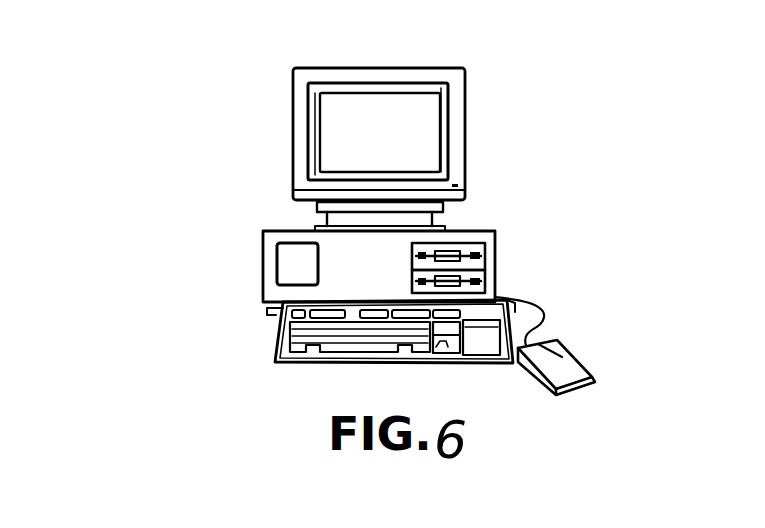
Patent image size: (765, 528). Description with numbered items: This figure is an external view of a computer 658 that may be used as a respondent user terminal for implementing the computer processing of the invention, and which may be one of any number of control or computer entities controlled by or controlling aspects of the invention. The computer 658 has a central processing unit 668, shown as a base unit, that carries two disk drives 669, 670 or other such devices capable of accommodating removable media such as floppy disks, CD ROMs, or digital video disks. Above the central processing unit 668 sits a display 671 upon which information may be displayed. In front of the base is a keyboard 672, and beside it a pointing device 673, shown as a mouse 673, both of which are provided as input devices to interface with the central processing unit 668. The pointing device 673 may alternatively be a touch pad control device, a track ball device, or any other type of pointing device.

The computer 658 is at (206, 106).
The central processing unit 668 is at (275, 208).
The disk drive 669 is at (400, 256).
The disk drive 670 is at (400, 284).
The display 671 is at (484, 113).
The keyboard 672 is at (261, 334).
The pointing device 673 is at (592, 348).